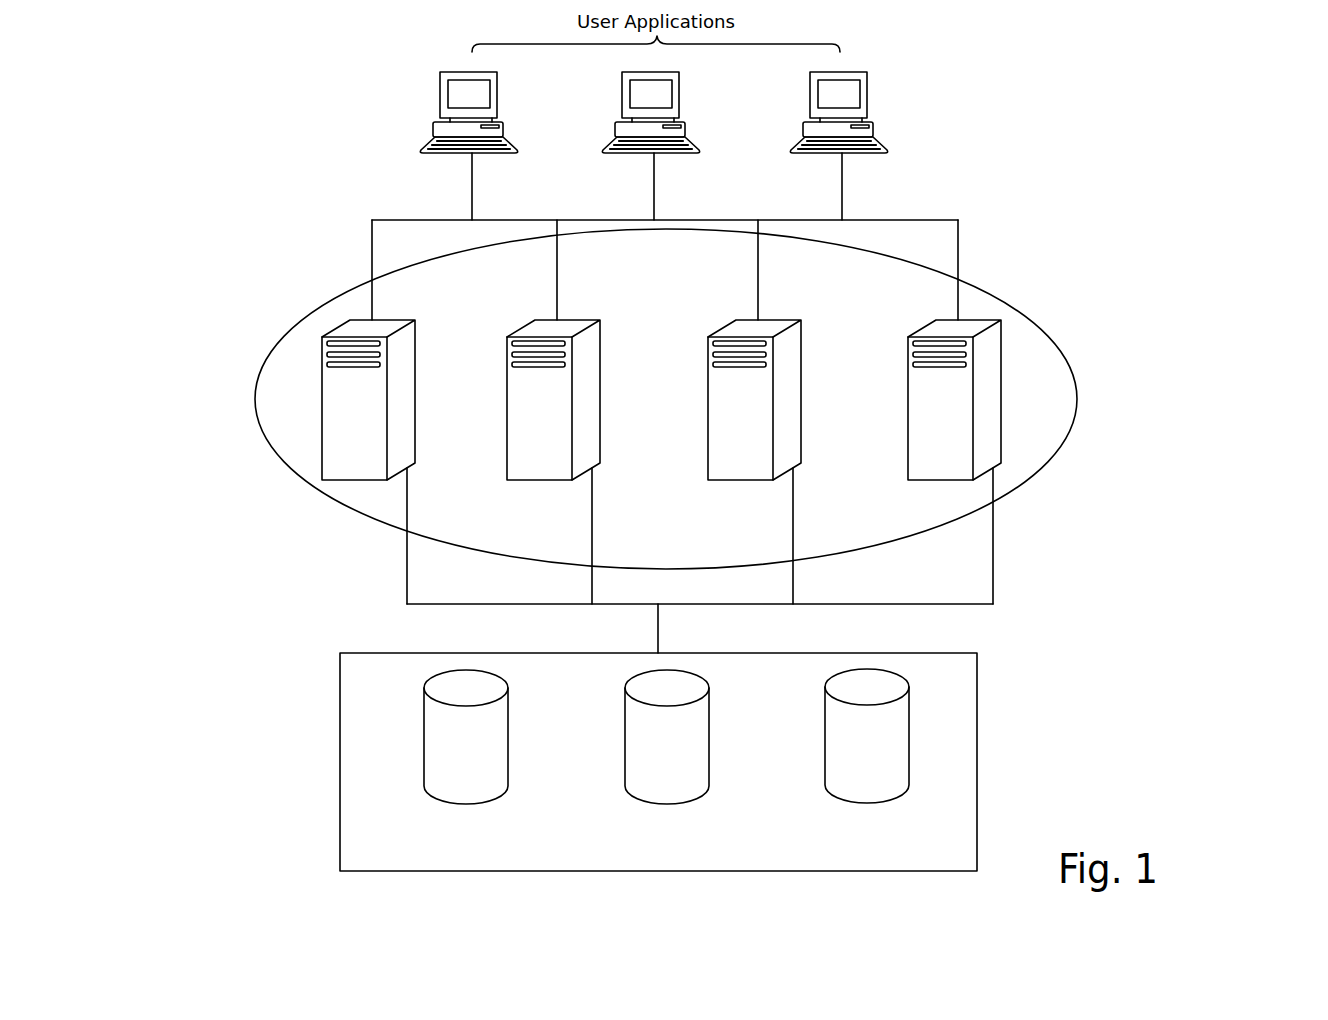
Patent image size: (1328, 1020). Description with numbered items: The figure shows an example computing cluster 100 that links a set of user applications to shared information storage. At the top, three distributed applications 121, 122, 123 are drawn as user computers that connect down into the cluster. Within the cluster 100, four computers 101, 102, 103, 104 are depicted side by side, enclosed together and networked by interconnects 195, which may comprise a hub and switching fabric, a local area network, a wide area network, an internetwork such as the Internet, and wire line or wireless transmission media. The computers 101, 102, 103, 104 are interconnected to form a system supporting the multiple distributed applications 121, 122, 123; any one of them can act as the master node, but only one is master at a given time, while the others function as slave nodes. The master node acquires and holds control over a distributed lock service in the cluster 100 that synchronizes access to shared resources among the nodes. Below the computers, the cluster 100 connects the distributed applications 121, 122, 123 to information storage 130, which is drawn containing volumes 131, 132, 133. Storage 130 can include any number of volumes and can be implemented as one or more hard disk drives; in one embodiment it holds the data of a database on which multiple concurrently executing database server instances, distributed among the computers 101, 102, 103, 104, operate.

The computing cluster 100 is at (326, 302).
The computer 101 is at (370, 436).
The computer 102 is at (553, 412).
The computer 103 is at (754, 412).
The computer 104 is at (954, 412).
The distributed application 121 is at (483, 102).
The distributed application 122 is at (650, 146).
The distributed application 123 is at (838, 146).
The information storage 130 is at (713, 838).
The volume 131 is at (482, 756).
The volume 132 is at (667, 737).
The volume 133 is at (867, 736).
The interconnects 195 is at (973, 257).